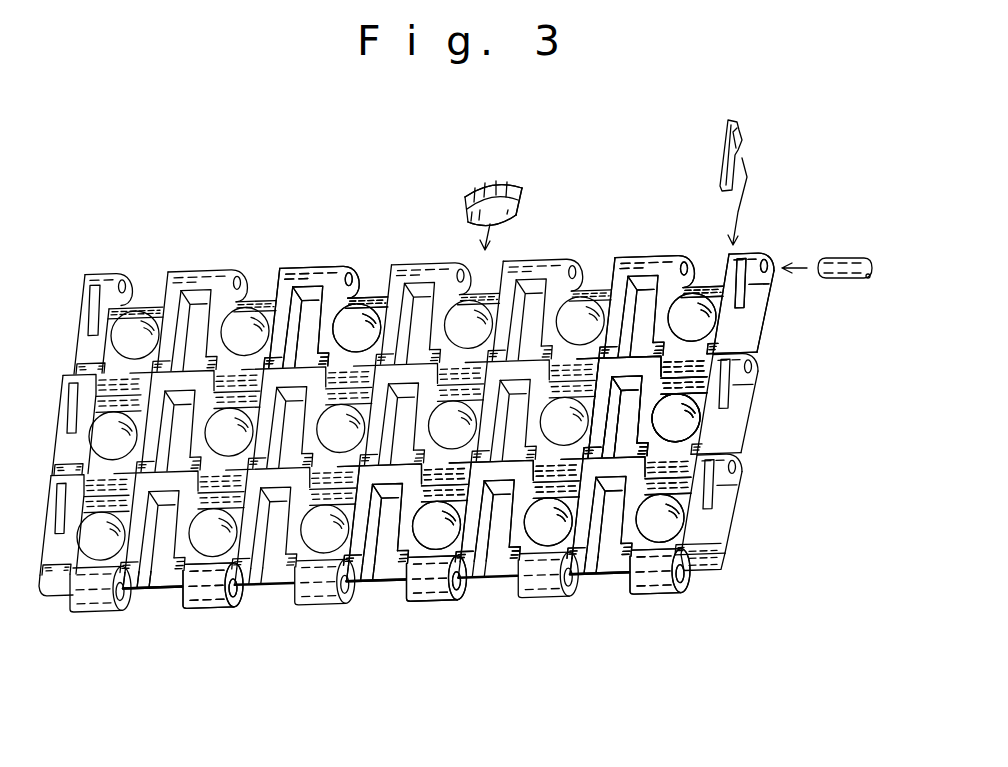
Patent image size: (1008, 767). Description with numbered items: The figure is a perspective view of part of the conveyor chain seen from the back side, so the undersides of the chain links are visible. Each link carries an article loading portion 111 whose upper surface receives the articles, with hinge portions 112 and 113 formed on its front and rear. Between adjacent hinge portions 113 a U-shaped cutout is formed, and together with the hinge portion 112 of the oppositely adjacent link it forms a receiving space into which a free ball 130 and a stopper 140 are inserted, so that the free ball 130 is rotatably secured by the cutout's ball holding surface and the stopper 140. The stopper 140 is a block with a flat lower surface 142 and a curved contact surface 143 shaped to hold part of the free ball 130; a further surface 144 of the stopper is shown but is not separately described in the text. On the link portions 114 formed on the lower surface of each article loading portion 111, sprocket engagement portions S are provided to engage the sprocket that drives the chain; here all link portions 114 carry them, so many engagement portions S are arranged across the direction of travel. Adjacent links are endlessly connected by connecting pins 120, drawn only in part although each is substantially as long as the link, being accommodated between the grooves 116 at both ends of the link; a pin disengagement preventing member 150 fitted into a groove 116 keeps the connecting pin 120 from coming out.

The article loading portion 111 is at (602, 585).
The hinge portion 112 is at (687, 368).
The hinge portion 113 is at (314, 273).
The link portion 114 is at (472, 512).
The groove 116 is at (740, 293).
The connecting pin 120 is at (851, 242).
The free ball 130 is at (700, 418).
The stopper 140 is at (450, 185).
The flat lower surface 142 is at (497, 182).
The contact surface 143 is at (483, 215).
The retainer side portion 144 is at (520, 200).
The pin disengagement preventing member 150 is at (722, 148).
The sprocket engagement portion S is at (160, 563).